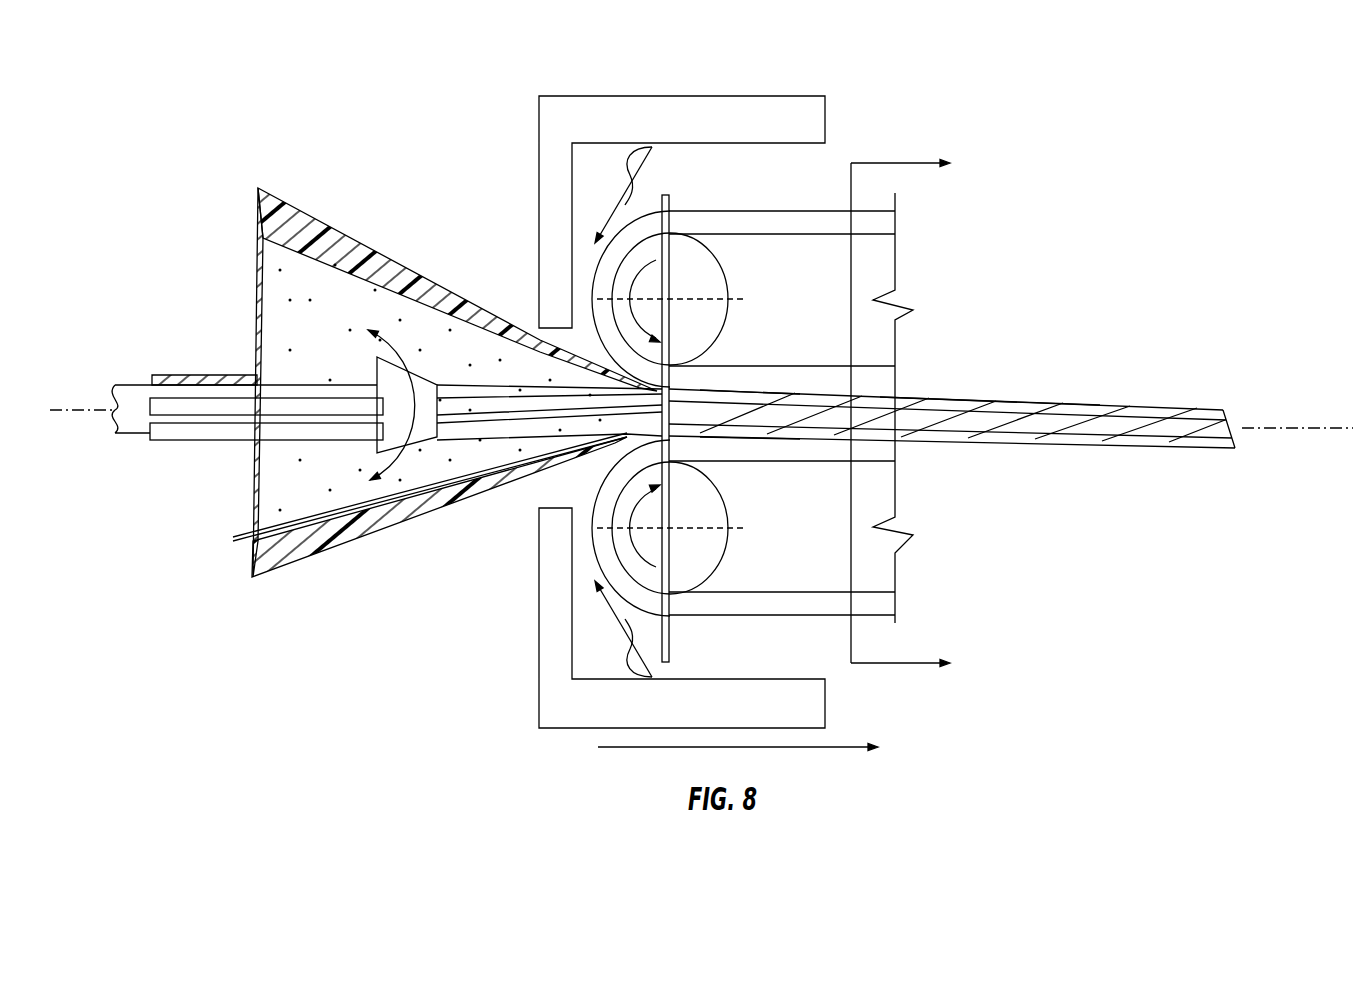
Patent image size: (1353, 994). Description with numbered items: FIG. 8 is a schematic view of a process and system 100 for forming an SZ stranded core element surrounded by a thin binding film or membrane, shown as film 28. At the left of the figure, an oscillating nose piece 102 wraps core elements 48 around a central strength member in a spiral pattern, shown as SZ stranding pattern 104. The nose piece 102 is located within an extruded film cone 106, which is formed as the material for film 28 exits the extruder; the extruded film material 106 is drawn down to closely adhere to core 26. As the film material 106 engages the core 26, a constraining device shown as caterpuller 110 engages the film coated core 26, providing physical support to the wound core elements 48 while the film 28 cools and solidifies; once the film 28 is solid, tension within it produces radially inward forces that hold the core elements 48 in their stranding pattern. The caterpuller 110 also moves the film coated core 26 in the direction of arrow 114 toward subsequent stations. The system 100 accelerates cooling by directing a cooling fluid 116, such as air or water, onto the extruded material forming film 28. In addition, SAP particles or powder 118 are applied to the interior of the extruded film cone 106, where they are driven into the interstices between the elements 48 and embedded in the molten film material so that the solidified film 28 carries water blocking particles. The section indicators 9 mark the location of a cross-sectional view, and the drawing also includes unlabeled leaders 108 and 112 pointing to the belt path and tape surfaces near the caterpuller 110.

The system 100 is at (845, 125).
The section line 9- 9 is at (911, 414).
The extruded film cone 106 is at (362, 266).
The SAP particles 118 is at (297, 330).
The core elements 48 is at (208, 376).
The oscillating nose piece 102 is at (393, 447).
The SZ stranding pattern 104 is at (543, 414).
The belt 108 is at (595, 512).
The caterpuller 110 is at (827, 310).
The tape surfaces 112 is at (748, 385).
The cooling fluid 116 is at (655, 172).
The core 26 is at (1014, 422).
The film 28 is at (937, 392).
The arrow 114 is at (805, 748).